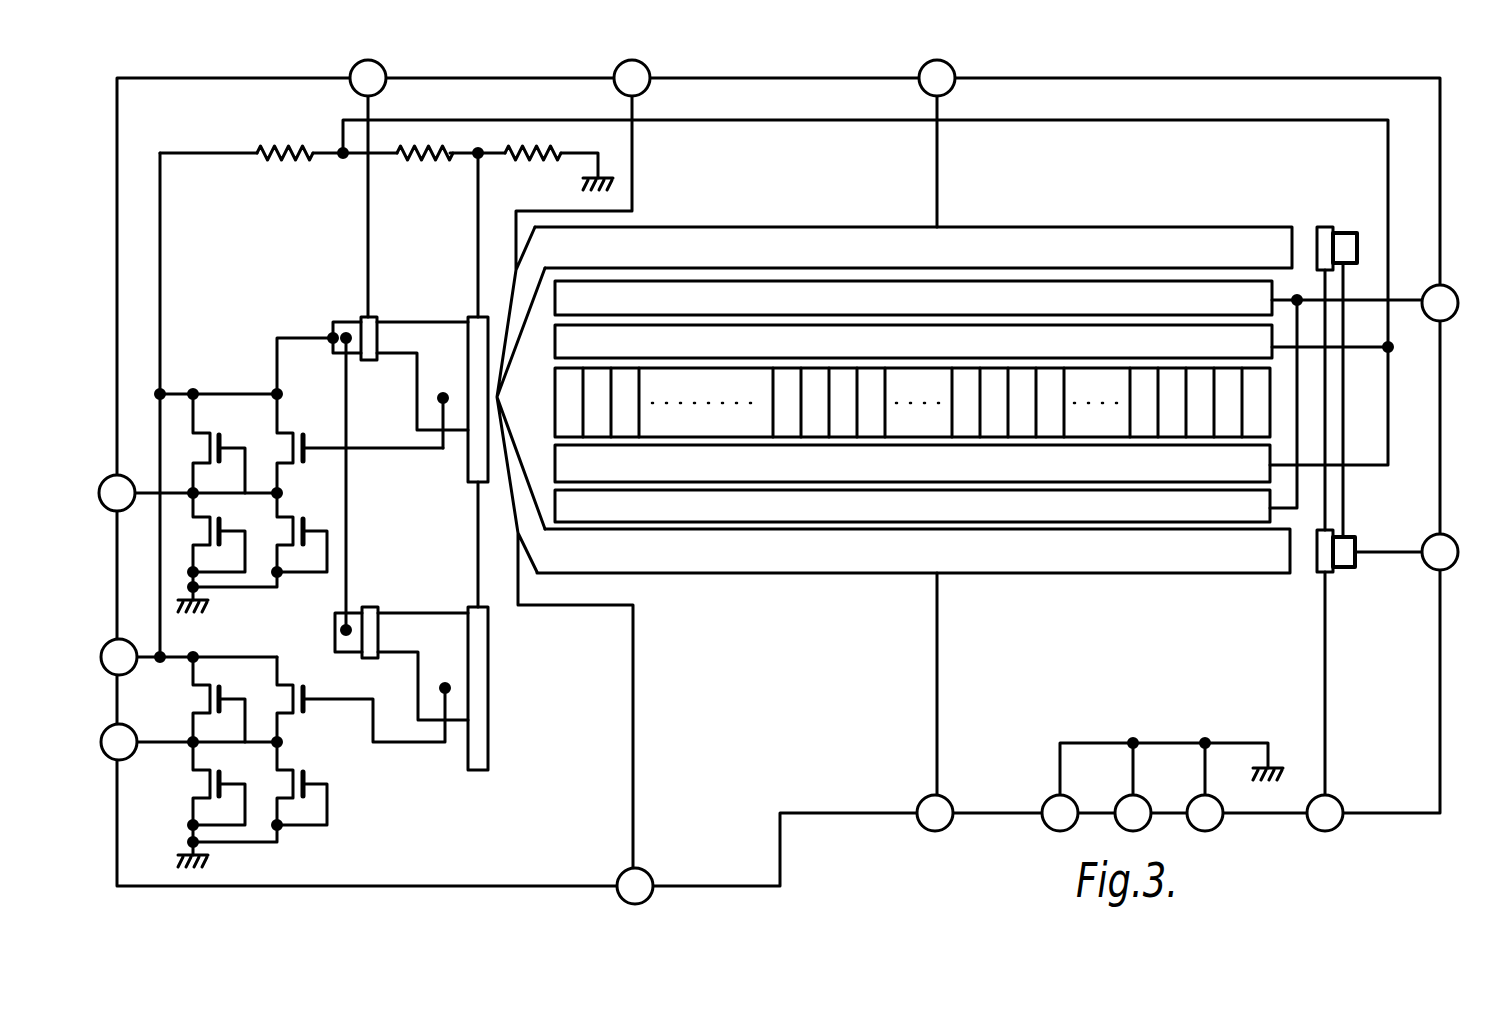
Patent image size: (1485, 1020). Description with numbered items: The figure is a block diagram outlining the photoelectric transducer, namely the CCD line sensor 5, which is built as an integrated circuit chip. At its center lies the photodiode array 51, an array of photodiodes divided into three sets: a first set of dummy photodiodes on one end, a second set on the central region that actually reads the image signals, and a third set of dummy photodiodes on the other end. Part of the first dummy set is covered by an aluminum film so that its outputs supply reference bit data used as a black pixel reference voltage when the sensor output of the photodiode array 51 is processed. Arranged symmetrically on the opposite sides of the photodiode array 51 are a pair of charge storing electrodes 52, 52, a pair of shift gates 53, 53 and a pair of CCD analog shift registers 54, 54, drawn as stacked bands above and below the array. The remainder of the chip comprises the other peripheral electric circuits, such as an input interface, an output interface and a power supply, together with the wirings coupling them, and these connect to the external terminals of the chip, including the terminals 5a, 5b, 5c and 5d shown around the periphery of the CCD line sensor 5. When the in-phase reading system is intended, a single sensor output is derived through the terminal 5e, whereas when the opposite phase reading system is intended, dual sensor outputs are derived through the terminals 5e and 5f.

The CCD line sensor 5 is at (133, 108).
The output terminal 5a is at (1428, 292).
The clock terminal 5b is at (963, 100).
The ground terminal 5c is at (925, 845).
The bias terminal 5d is at (372, 96).
The terminal 5e is at (141, 471).
The terminal 5f is at (134, 759).
The photodiode array 51 is at (1137, 432).
The charge storing electrode 52 is at (1237, 473).
The shift gate 53 is at (672, 512).
The CCD analog shift register 54 is at (788, 570).